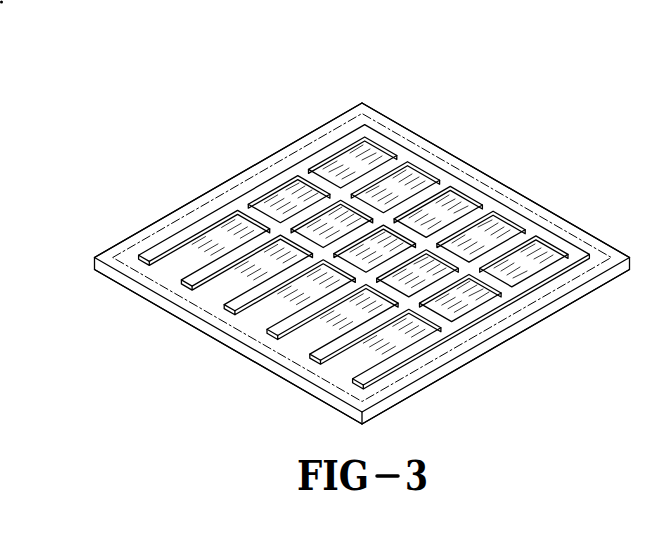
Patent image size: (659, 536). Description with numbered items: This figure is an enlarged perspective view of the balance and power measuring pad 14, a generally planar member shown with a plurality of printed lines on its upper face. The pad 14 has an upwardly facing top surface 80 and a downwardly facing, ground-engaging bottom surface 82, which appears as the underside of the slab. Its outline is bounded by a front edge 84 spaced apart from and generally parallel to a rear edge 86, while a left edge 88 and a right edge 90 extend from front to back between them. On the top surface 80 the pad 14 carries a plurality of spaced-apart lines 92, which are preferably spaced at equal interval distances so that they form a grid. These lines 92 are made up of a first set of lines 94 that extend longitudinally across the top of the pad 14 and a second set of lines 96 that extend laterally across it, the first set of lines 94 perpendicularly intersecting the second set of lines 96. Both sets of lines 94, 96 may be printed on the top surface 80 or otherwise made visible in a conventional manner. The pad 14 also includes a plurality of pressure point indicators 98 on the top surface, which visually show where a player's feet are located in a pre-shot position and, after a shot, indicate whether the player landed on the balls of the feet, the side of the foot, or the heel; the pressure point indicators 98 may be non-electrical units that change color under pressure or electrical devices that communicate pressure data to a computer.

The balance and power measuring pad 14 is at (214, 124).
The top surface 80 is at (502, 198).
The bottom surface 82 is at (262, 368).
The front edge 84 is at (558, 214).
The rear edge 86 is at (223, 337).
The left edge 88 is at (320, 127).
The right edge 90 is at (527, 325).
The lines 92 is at (367, 167).
The first set of lines 94 is at (189, 226).
The second set of lines 96 is at (267, 212).
The pressure point indicators 98 is at (428, 142).